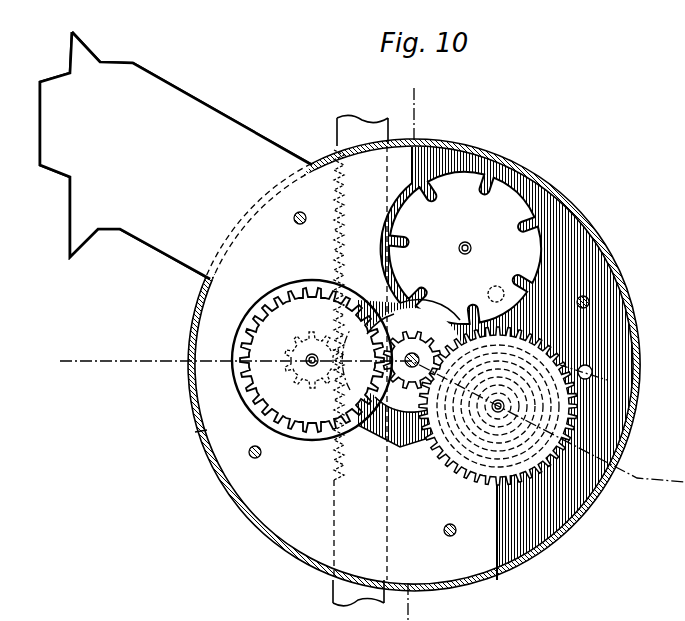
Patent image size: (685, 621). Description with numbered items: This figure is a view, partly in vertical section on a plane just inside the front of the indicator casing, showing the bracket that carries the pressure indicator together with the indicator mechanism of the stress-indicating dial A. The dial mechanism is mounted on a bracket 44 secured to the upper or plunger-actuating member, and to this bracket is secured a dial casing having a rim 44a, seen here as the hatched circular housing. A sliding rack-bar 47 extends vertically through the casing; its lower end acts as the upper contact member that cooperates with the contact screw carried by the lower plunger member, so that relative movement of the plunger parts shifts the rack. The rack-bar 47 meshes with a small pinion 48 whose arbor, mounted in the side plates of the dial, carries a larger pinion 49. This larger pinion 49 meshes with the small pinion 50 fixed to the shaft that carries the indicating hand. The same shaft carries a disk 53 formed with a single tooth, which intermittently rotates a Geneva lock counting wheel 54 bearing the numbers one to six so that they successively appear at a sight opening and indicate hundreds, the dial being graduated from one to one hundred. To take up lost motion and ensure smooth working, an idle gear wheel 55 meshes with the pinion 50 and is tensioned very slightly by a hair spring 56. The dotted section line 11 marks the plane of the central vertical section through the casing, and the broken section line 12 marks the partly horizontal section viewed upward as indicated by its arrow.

The bracket 44 is at (177, 155).
The rim 44a is at (553, 203).
The sliding rack-bar 47 is at (337, 137).
The small pinion 48 is at (306, 384).
The larger pinion 49 is at (302, 432).
The small pinion 50 is at (411, 389).
The disk 53 is at (447, 322).
The Geneva lock counting wheel 54 is at (506, 217).
The idle gear wheel 55 is at (487, 482).
The hair spring 56 is at (468, 452).
The section line 11 is at (447, 617).
The section line 12 is at (82, 361).
The stress-indicating dial A is at (195, 432).